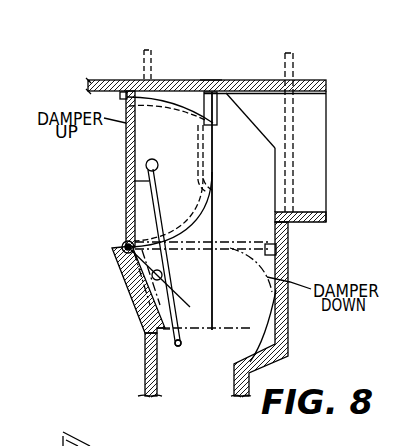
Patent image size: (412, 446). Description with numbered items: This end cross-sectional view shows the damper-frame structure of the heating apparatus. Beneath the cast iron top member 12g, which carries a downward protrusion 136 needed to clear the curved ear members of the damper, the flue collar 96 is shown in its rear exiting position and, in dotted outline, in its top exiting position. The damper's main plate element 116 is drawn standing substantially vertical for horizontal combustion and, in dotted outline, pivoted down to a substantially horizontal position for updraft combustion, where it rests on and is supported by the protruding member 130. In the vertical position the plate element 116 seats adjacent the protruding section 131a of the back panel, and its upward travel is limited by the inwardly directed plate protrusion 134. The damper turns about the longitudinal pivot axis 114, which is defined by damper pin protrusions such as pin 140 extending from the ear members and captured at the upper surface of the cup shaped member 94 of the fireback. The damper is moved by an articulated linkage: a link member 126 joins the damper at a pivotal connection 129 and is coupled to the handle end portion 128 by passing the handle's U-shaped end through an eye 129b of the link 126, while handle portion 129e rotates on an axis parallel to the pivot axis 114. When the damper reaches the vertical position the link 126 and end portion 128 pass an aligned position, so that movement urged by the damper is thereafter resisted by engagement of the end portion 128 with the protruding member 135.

The top member 12g is at (125, 79).
The inwardly directed plate protrusion 134 is at (209, 80).
The flue collar 96 is at (301, 82).
The main plate element 116 is at (125, 177).
The downward protrusion 136 is at (218, 103).
The pivotal connection 129 is at (154, 158).
The link member 126 is at (151, 187).
The damper pin protrusion 140 is at (122, 243).
The eye 129b is at (156, 251).
The end portion 128 is at (163, 275).
The handle portion 129e is at (181, 344).
The longitudinal pivot axis 114 is at (116, 259).
The cup shaped member 94 is at (125, 326).
The protruding member 135 is at (165, 331).
The protruding member 130 is at (271, 253).
The protruding section 131a is at (273, 354).